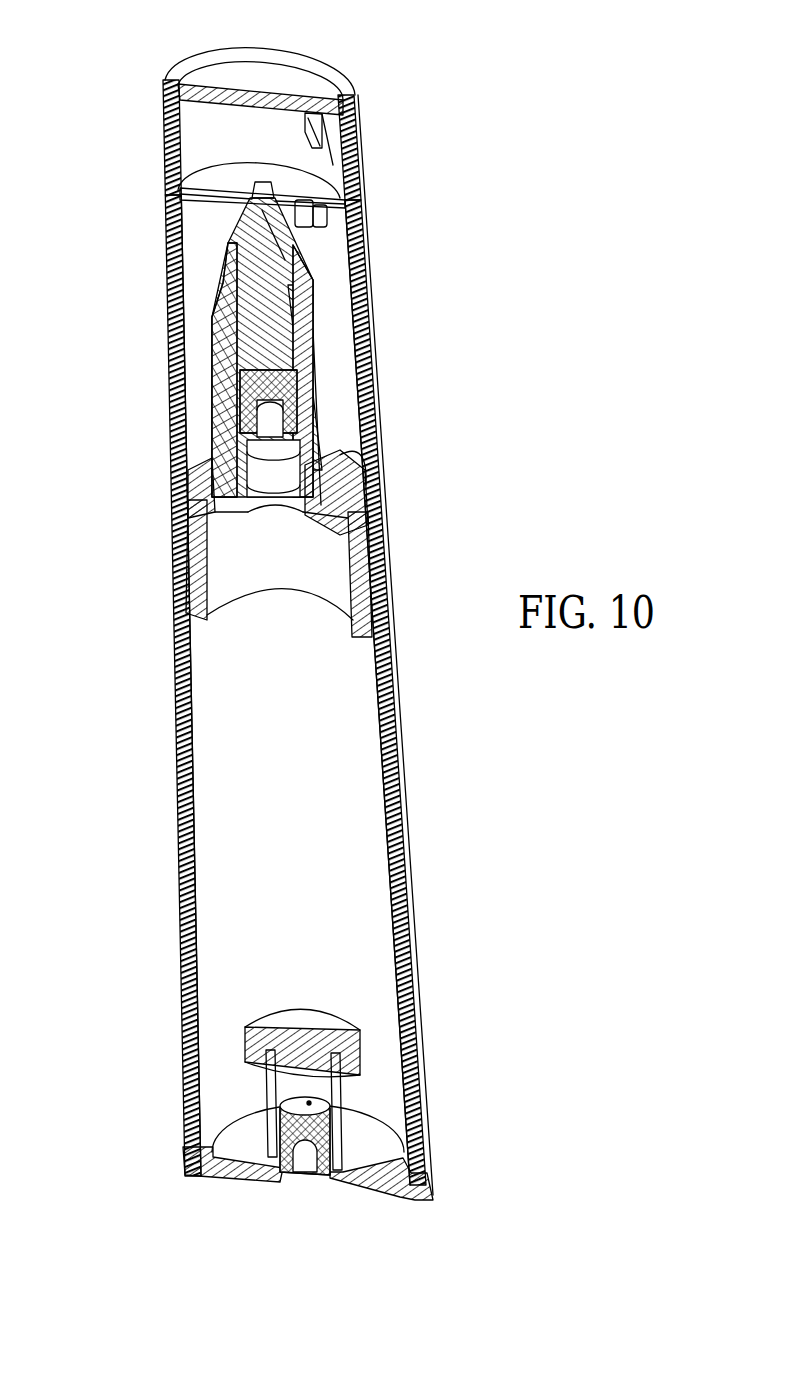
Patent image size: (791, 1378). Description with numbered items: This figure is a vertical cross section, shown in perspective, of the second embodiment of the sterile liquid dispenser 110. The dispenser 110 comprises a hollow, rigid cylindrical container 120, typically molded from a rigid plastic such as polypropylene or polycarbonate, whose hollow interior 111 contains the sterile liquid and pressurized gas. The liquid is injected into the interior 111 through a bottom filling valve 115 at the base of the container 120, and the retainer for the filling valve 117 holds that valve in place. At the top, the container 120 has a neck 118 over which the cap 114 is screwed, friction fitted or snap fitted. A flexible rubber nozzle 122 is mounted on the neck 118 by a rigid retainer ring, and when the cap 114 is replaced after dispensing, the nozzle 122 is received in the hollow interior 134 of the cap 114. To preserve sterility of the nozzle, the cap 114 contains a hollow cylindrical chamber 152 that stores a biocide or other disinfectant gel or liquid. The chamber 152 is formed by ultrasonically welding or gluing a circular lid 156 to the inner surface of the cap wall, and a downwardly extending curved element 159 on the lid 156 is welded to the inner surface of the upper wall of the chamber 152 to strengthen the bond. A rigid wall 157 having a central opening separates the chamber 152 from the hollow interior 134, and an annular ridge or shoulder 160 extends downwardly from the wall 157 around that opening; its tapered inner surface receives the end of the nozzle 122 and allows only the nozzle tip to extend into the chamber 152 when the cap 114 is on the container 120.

The sterile liquid dispenser 110 is at (276, 645).
The hollow interior 111 is at (205, 795).
The cap 114 is at (385, 410).
The bottom filling valve 115 is at (312, 1178).
The retainer for the filling valve 117 is at (362, 1052).
The neck 118 is at (175, 590).
The container 120 is at (420, 950).
The flexible nozzle 122 is at (215, 283).
The hollow interior of cap 134 is at (195, 262).
The hollow cylindrical chamber 152 is at (183, 141).
The circular lid 156 is at (288, 75).
The rigid wall 157 is at (182, 197).
The downwardly extending curved element 159 is at (338, 163).
The annular ridge or shoulder 160 is at (320, 229).